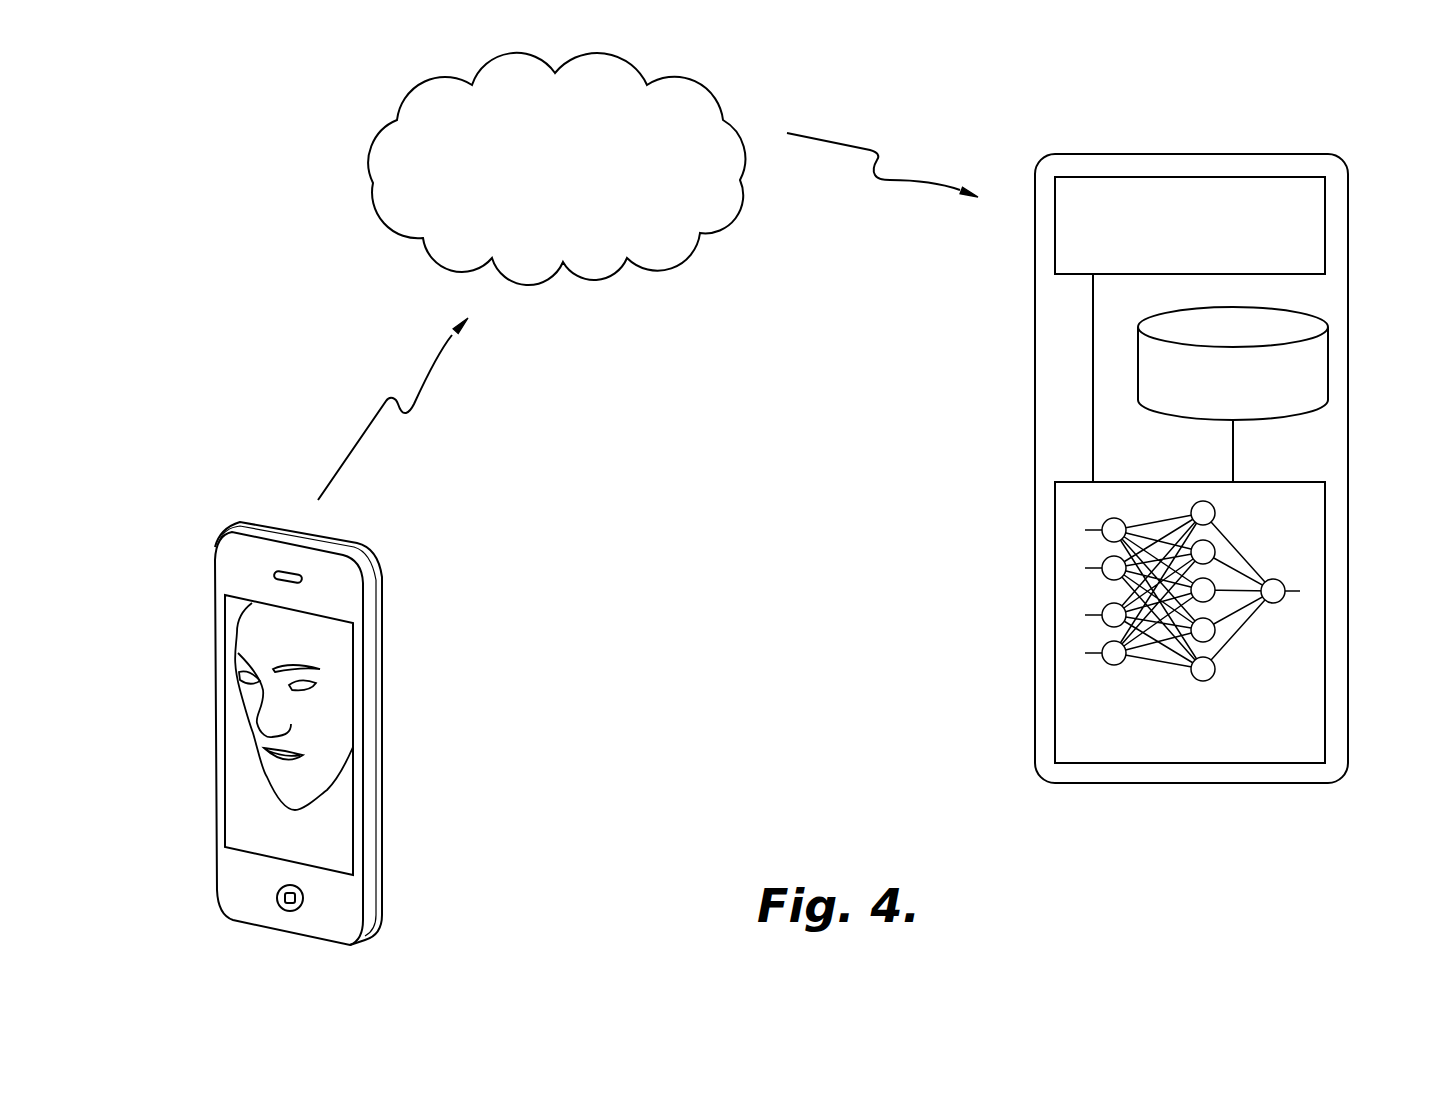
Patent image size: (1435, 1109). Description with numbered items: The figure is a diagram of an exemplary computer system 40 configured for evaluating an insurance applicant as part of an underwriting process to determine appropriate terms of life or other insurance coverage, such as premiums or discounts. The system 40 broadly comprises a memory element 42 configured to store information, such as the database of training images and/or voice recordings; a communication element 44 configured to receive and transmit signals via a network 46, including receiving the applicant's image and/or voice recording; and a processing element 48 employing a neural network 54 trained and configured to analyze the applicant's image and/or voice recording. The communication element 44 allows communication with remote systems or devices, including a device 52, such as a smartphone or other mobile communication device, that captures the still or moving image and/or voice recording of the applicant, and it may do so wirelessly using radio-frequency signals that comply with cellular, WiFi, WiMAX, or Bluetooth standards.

The computer system 40 is at (1234, 426).
The memory element 42 is at (1250, 397).
The communication element 44 is at (1204, 236).
The network 46 is at (575, 179).
The processing element 48 is at (1210, 739).
The device 52 is at (214, 495).
The neural network 54 is at (1268, 660).